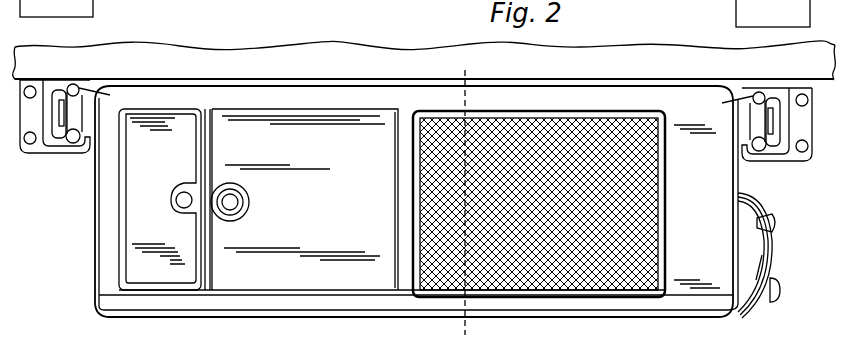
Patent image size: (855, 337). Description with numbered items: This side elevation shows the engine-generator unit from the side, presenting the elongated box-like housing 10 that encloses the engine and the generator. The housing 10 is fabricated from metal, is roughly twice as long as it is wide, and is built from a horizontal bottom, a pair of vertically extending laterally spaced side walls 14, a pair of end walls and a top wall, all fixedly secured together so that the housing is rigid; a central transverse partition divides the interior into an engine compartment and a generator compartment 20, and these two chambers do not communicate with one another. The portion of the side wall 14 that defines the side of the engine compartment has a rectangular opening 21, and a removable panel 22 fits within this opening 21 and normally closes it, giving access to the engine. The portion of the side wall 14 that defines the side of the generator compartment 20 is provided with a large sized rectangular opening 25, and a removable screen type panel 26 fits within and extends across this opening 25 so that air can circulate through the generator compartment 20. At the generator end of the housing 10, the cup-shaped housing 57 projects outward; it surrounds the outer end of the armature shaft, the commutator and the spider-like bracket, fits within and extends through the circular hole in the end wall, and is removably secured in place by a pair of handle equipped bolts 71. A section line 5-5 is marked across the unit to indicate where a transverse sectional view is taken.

The section line 5- 5 is at (476, 63).
The box-like housing 10 is at (95, 243).
The side walls 14 is at (405, 198).
The generator compartment 20 is at (291, 270).
The rectangular openings 21 is at (323, 296).
The removable panels 22 is at (160, 199).
The large sized rectangular openings 25 is at (668, 232).
The removable screen type panels 26 is at (645, 255).
The cup-shaped housing 57 is at (770, 253).
The handle equipped bolts 71 is at (779, 284).